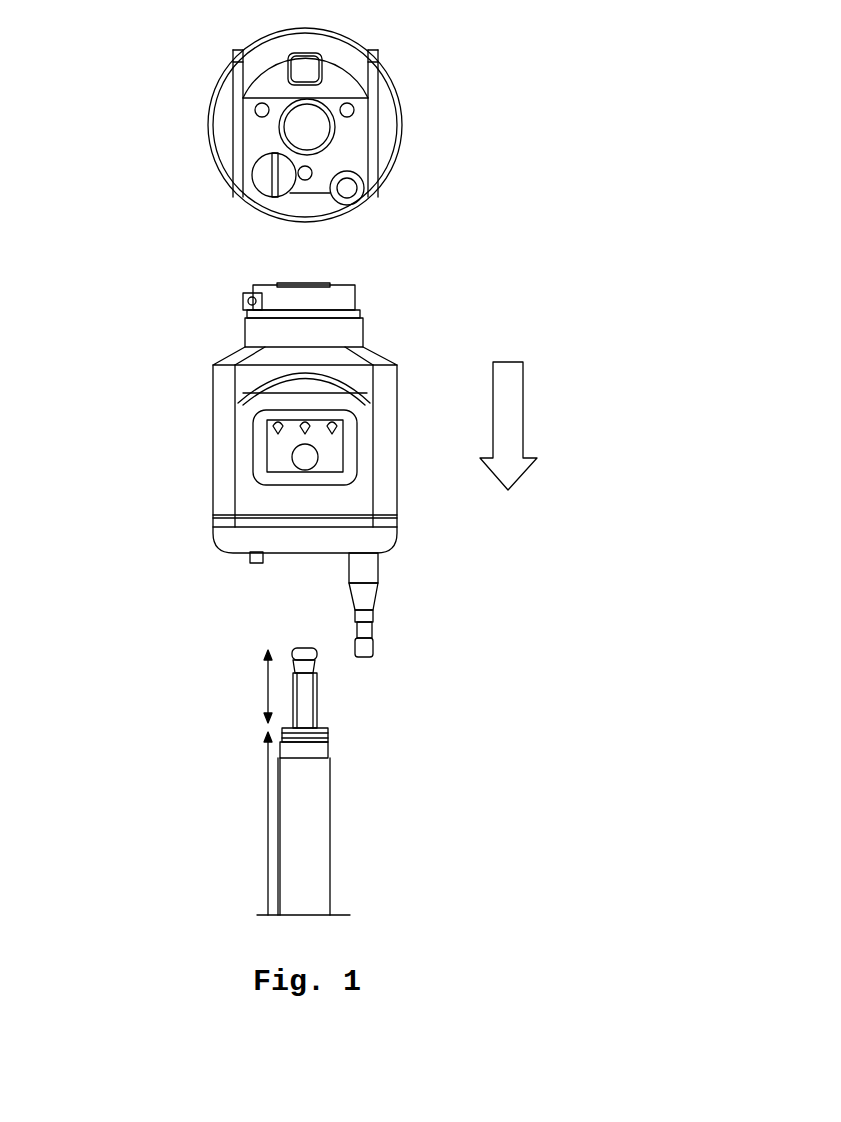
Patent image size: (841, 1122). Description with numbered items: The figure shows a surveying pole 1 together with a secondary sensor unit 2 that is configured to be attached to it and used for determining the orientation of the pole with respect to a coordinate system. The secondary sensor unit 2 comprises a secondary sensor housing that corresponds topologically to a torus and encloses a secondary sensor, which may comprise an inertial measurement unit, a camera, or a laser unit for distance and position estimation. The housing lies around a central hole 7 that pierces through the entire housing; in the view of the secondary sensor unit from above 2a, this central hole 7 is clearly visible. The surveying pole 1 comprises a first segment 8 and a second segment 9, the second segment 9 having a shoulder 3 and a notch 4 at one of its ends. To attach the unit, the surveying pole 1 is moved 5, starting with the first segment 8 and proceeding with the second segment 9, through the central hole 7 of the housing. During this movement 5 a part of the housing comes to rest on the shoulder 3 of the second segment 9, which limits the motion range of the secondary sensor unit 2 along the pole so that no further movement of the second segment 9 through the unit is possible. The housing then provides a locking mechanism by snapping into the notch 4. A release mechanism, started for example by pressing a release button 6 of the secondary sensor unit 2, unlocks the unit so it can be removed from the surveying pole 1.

The surveying pole 1 is at (333, 781).
The secondary sensor unit 2 is at (165, 415).
The view of the secondary sensor unit from above 2a is at (255, 125).
The shoulder 3 is at (347, 717).
The notch 4 is at (353, 762).
The movement of the surveying pole 5 is at (544, 419).
The release button 6 is at (202, 282).
The central hole 7 is at (399, 95).
The first segment 8 is at (218, 782).
The second segment 9 is at (257, 836).